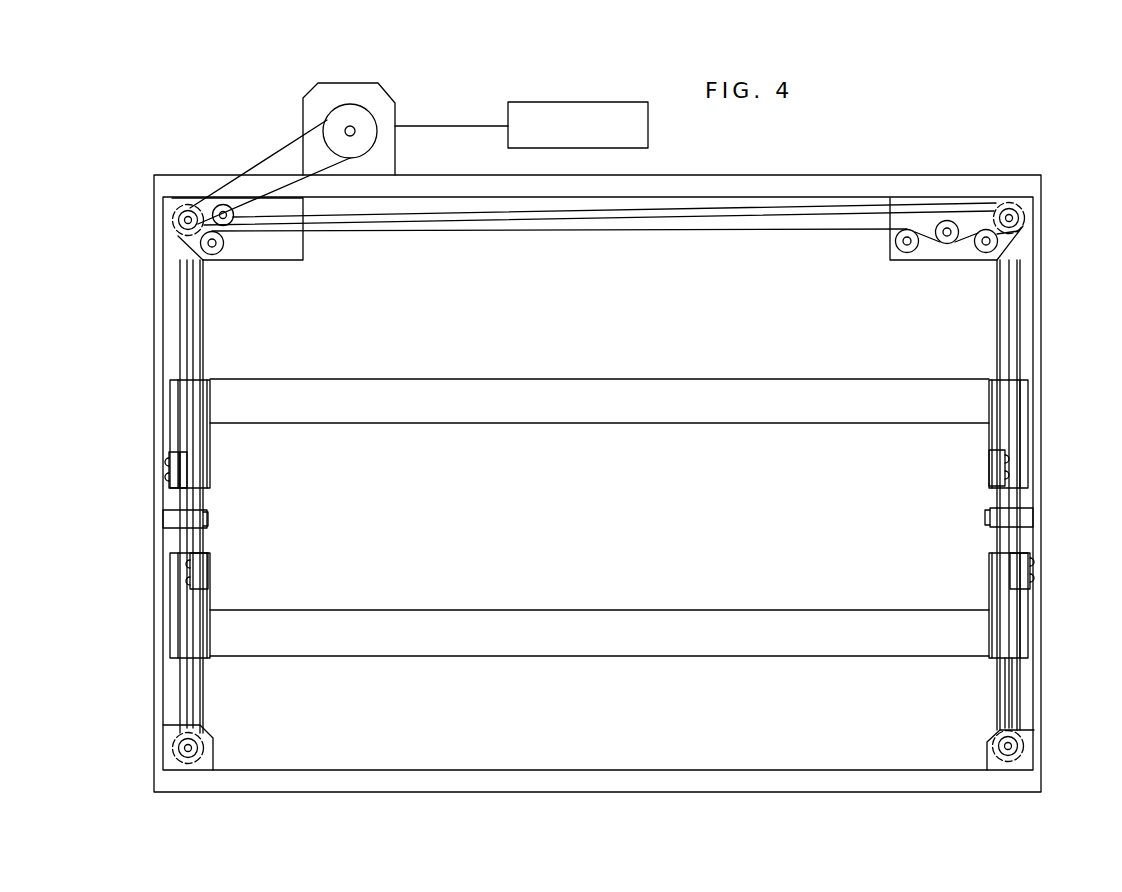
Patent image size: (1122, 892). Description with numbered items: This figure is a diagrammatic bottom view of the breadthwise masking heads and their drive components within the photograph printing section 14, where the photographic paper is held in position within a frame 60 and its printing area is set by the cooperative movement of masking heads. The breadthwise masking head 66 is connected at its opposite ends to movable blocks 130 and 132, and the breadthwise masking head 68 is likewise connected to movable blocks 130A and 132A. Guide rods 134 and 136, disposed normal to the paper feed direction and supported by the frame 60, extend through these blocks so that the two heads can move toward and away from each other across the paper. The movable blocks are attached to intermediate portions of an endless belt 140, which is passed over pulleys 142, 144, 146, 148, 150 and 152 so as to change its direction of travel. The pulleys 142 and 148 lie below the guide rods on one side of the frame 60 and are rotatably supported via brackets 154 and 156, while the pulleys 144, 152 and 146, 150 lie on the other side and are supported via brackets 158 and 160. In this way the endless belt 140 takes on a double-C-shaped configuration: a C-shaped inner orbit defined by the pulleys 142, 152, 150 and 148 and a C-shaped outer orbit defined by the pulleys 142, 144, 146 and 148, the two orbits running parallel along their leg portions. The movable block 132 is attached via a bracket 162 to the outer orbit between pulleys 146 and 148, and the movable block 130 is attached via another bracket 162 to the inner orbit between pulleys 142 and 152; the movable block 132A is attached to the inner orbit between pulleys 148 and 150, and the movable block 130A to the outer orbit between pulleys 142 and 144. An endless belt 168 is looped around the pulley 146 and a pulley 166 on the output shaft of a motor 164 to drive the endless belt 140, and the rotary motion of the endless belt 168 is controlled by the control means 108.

The photograph printing section 14 is at (1041, 396).
The frame 60 is at (154, 380).
The breadthwise masking head 66 is at (620, 412).
The breadthwise masking head 68 is at (620, 624).
The control means 108 is at (590, 114).
The movable block 130 is at (990, 428).
The movable block 130A is at (987, 603).
The movable block 132 is at (210, 443).
The movable block 132A is at (210, 602).
The guide rod 134 is at (1018, 680).
The guide rod 136 is at (195, 664).
The endless belt 140 is at (624, 234).
The pulley 142 is at (1026, 744).
The pulley 144 is at (1026, 220).
The pulley 146 is at (172, 224).
The pulley 148 is at (172, 748).
The pulley 150 is at (222, 250).
The pulley 152 is at (980, 253).
The bracket 154 is at (986, 752).
The bracket 156 is at (213, 744).
The bracket 158 is at (918, 253).
The bracket 160 is at (303, 246).
The bracket 162 is at (168, 470).
The motor 164 is at (390, 104).
The pulley 166 is at (368, 138).
The endless belt 168 is at (272, 158).